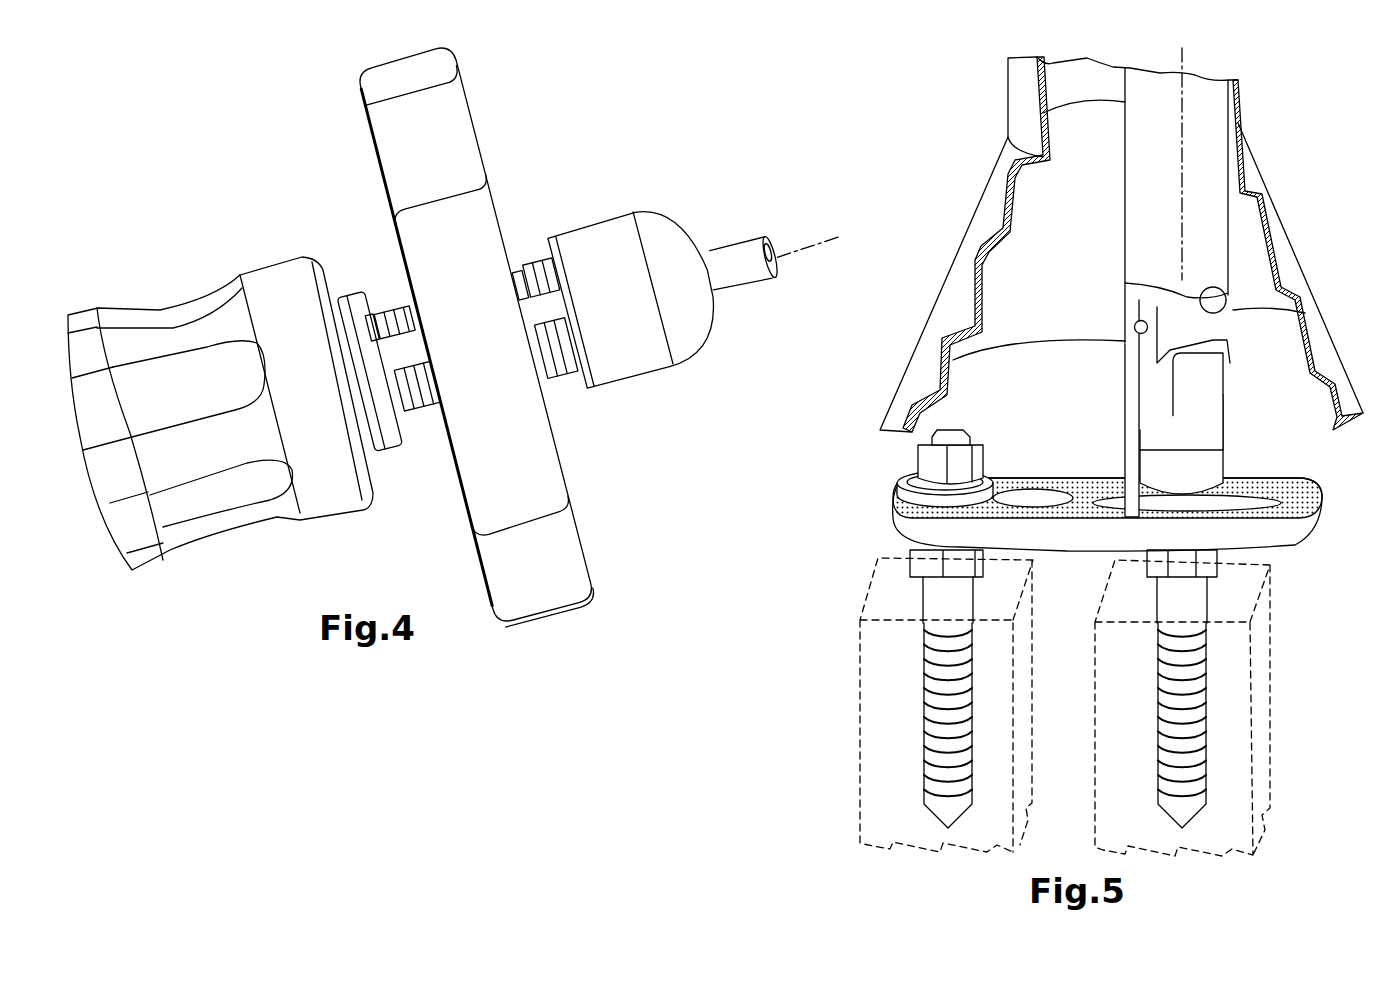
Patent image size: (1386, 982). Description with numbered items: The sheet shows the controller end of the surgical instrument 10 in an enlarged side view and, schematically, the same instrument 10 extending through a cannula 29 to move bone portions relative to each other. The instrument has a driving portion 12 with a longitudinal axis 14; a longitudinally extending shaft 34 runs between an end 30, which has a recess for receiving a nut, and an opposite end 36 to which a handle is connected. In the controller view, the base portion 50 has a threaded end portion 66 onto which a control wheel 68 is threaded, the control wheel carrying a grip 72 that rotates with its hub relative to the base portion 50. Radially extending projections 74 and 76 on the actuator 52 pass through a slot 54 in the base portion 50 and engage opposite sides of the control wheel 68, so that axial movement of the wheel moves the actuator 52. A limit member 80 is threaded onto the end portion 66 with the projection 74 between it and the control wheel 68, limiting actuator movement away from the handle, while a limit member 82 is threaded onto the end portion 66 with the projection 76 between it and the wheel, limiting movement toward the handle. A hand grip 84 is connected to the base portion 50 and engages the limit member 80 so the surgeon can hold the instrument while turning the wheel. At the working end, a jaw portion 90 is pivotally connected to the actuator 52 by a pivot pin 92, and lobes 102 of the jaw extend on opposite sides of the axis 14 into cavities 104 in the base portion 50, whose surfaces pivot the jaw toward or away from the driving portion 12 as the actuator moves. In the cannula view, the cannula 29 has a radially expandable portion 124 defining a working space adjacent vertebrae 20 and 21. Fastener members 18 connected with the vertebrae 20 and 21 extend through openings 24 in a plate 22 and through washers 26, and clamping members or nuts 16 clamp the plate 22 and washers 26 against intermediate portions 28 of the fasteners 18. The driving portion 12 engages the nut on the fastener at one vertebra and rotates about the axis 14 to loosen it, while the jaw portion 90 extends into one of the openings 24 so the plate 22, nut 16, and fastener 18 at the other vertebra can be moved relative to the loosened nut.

In FIG. 5, the surgical instrument 10 is at (1234, 119).
In FIG. 4, the driving portion 12 is at (717, 247).
In FIG. 5, the driving portion 12 is at (1228, 460).
In FIG. 4, the longitudinal axis 14 is at (812, 245).
In FIG. 5, the longitudinal axis 14 is at (1183, 55).
In FIG. 5, the clamping member or nut 16 is at (932, 472).
In FIG. 5, the fastener member 18 is at (925, 608).
In FIG. 5, the vertebra 20 is at (1257, 770).
In FIG. 5, the vertebra 21 is at (878, 797).
In FIG. 5, the plate 22 is at (1312, 527).
In FIG. 5, the openings 24 is at (1018, 496).
In FIG. 5, the washers 26 is at (918, 517).
In FIG. 5, the intermediate portions 28 is at (930, 562).
In FIG. 5, the cannula 29 is at (1023, 87).
In FIG. 5, the end 30 is at (1210, 447).
In FIG. 4, the shaft 34 is at (730, 277).
In FIG. 4, the end 36 is at (757, 278).
In FIG. 4, the base portion 50 is at (557, 382).
In FIG. 5, the base portion 50 is at (1205, 178).
In FIG. 4, the actuator 52 is at (390, 312).
In FIG. 4, the slot 54 is at (535, 272).
In FIG. 4, the threaded end portion 66 is at (432, 408).
In FIG. 4, the control wheel 68 is at (546, 621).
In FIG. 4, the grip 72 is at (447, 150).
In FIG. 4, the projection 74 is at (397, 312).
In FIG. 4, the projection 76 is at (527, 272).
In FIG. 4, the limit member 80 is at (352, 302).
In FIG. 4, the limit member 82 is at (593, 270).
In FIG. 4, the hand grip 84 is at (213, 503).
In FIG. 5, the jaw portion 90 is at (1123, 410).
In FIG. 5, the pivot pin 92 is at (1134, 327).
In FIG. 5, the lobes 102 is at (1210, 325).
In FIG. 5, the cavities 104 is at (1228, 300).
In FIG. 5, the radially expandable portion 124 is at (1268, 212).